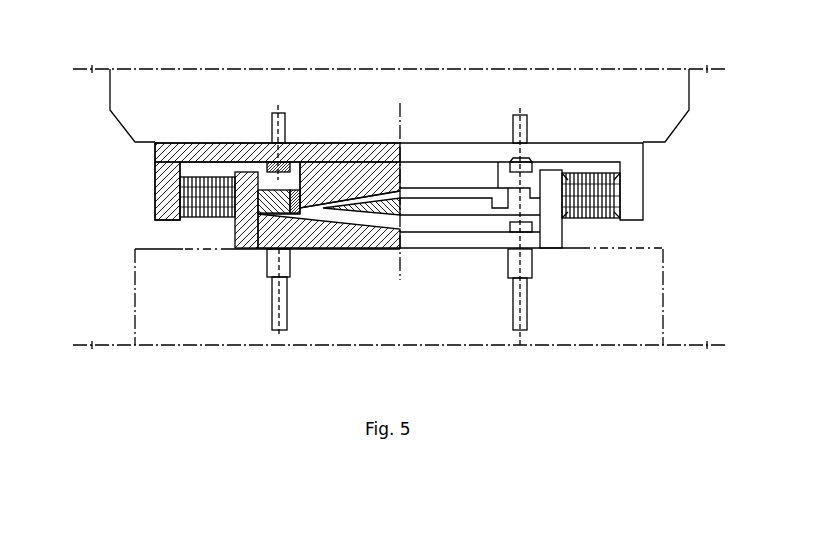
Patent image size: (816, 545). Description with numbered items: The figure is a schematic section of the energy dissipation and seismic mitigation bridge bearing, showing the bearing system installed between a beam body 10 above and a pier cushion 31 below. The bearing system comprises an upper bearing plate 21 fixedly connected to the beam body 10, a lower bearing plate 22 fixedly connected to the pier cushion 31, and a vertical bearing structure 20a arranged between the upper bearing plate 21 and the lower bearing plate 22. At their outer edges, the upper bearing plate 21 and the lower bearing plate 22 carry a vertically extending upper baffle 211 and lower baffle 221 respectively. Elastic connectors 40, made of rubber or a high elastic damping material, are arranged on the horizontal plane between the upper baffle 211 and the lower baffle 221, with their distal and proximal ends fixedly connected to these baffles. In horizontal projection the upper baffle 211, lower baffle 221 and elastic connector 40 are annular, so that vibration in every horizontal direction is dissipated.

The beam body 10 is at (535, 87).
The upper bearing plate 21 is at (364, 160).
The upper baffle 211 is at (163, 200).
The elastic connector 40 is at (203, 177).
The lower baffle 221 is at (245, 240).
The lower bearing plate 22 is at (320, 238).
The vertical bearing structure 20a is at (407, 170).
The pier cushion 31 is at (585, 332).